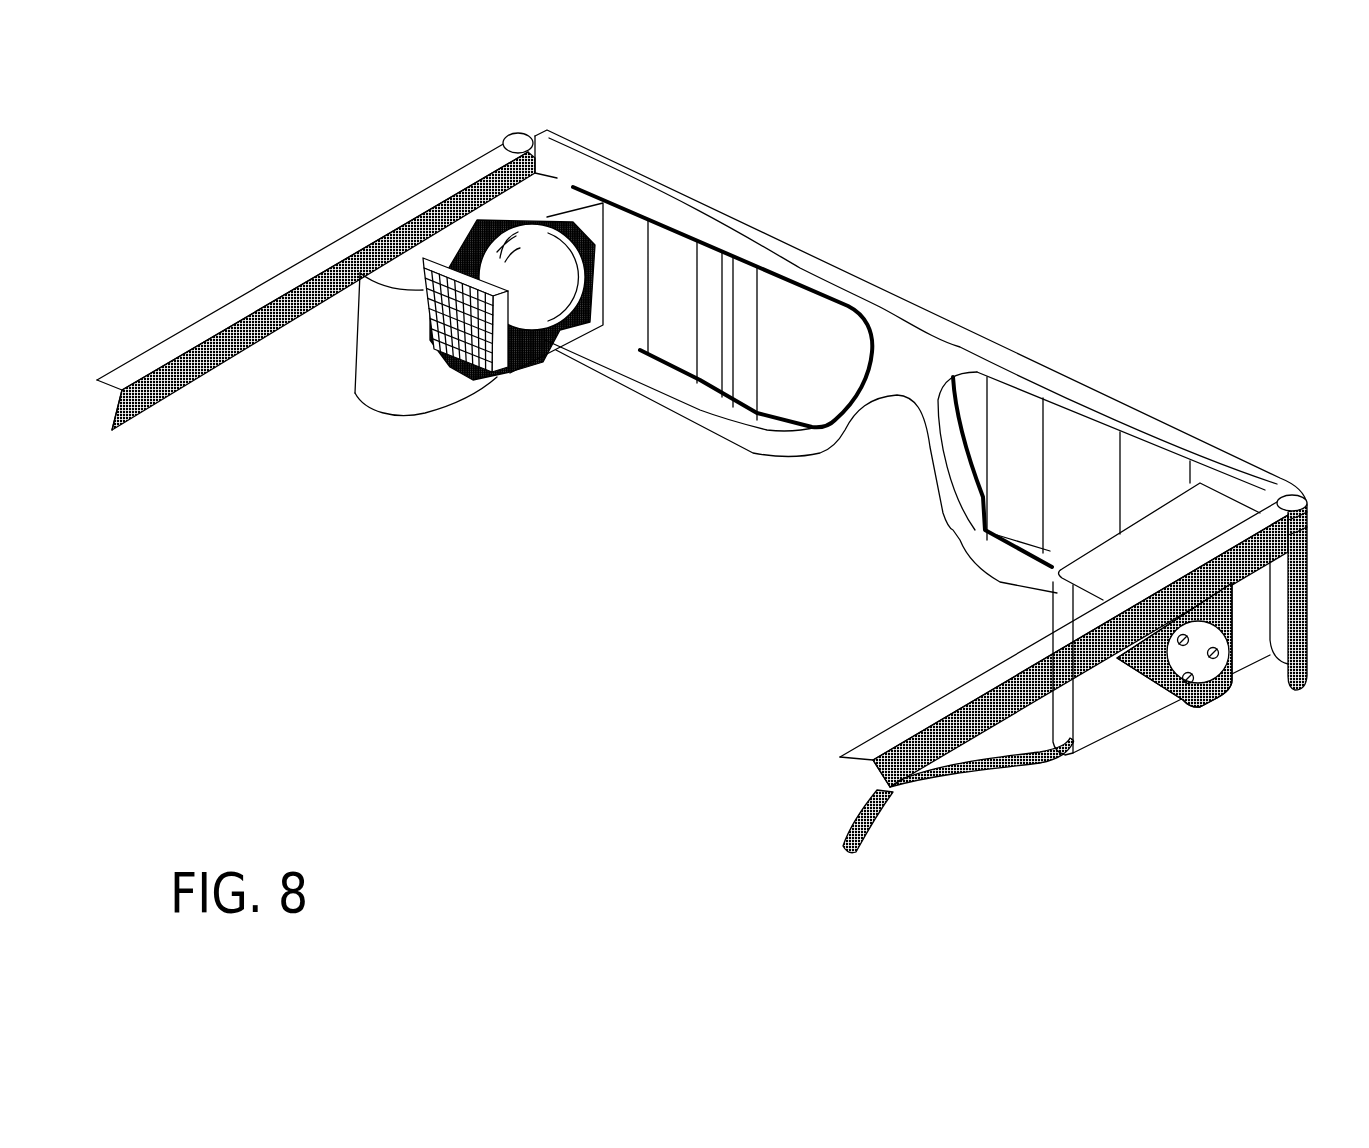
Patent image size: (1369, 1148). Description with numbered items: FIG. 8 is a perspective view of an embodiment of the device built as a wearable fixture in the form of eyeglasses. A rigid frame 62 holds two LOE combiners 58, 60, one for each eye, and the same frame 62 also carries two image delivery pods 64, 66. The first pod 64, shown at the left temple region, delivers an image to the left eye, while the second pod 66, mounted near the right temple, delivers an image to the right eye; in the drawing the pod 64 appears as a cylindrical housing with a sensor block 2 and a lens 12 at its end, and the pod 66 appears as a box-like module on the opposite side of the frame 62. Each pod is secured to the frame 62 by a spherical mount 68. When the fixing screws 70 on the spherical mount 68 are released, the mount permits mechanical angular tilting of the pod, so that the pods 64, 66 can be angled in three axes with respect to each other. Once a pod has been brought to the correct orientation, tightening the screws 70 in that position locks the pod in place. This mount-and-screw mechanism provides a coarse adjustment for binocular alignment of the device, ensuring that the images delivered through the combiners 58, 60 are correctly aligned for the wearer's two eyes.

The image sensor 2 is at (500, 365).
The lens 12 is at (547, 360).
The LOE combiner 58 is at (805, 310).
The LOE combiner 60 is at (1147, 463).
The rigid frame 62 is at (995, 345).
The image delivery pod 64 is at (387, 388).
The image delivery pod 66 is at (1073, 598).
The spherical mount 68 is at (1230, 667).
The fixing screws 70 is at (1183, 683).